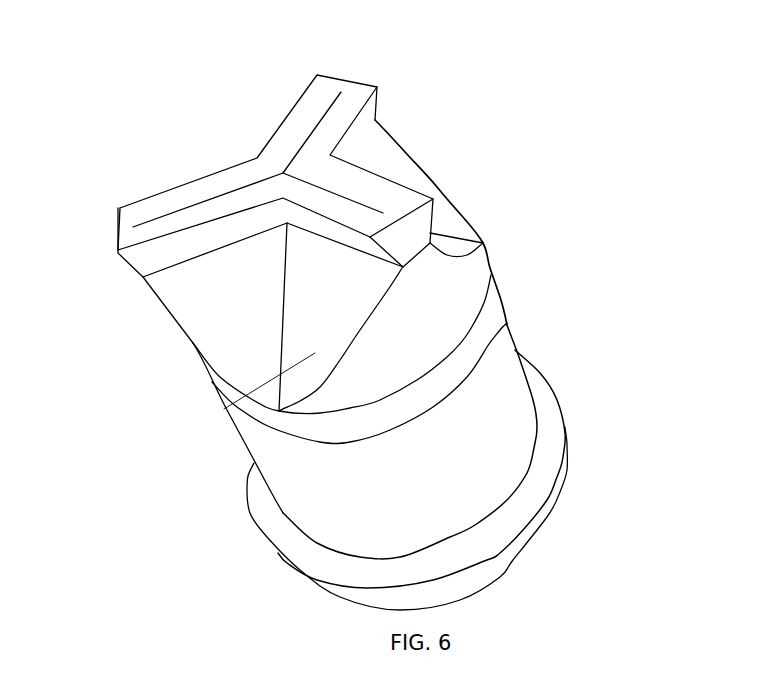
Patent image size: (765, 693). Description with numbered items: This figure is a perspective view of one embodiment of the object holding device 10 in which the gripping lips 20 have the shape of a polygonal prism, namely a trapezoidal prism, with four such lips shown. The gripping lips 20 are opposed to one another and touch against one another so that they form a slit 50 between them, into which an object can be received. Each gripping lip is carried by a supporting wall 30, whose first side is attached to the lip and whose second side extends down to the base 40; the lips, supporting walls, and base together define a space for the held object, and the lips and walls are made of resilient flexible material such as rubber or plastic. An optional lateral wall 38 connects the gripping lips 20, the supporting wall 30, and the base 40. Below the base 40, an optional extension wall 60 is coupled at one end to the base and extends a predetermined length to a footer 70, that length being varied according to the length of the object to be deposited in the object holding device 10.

The object holding device 10 is at (228, 110).
The gripping lips 20 is at (325, 88).
The supporting wall 30 is at (450, 228).
The lateral wall 38 is at (467, 300).
The base 40 is at (487, 327).
The slit 50 is at (300, 150).
The extension wall 60 is at (503, 390).
The footer 70 is at (538, 473).